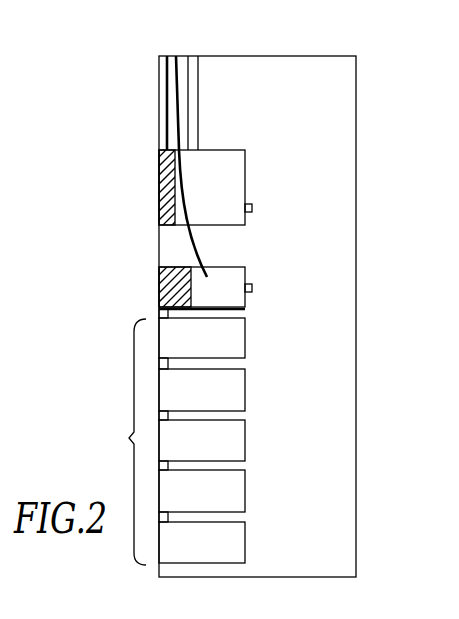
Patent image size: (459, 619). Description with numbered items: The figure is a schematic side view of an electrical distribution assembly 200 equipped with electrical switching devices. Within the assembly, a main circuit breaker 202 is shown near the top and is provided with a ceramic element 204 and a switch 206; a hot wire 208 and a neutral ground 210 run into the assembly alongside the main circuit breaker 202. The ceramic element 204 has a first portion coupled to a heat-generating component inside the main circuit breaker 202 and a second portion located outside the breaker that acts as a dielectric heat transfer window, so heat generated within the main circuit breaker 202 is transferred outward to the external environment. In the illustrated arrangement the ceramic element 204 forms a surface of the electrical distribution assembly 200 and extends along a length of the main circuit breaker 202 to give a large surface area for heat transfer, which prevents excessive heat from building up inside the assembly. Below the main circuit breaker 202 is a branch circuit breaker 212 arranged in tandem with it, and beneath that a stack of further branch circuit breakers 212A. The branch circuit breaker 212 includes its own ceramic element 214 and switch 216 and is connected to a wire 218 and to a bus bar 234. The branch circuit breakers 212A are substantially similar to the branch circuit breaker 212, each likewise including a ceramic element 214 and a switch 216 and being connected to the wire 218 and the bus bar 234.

The electrical distribution assembly 200 is at (305, 40).
The main circuit breaker 202 is at (215, 150).
The ceramic element 204 is at (164, 181).
The switch 206 is at (253, 205).
The hot wire 208 is at (198, 70).
The neutral ground 210 is at (172, 77).
The branch circuit breaker 212 is at (235, 267).
The branch circuit breakers 212A is at (131, 438).
The ceramic element 214 is at (175, 272).
The switch 216 is at (253, 289).
The wire 218 is at (189, 240).
The bus bar 234 is at (168, 311).